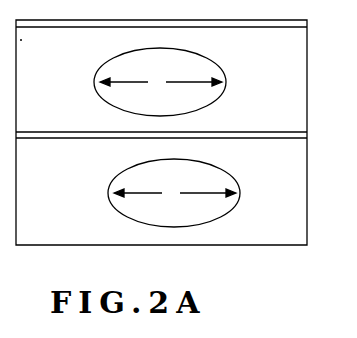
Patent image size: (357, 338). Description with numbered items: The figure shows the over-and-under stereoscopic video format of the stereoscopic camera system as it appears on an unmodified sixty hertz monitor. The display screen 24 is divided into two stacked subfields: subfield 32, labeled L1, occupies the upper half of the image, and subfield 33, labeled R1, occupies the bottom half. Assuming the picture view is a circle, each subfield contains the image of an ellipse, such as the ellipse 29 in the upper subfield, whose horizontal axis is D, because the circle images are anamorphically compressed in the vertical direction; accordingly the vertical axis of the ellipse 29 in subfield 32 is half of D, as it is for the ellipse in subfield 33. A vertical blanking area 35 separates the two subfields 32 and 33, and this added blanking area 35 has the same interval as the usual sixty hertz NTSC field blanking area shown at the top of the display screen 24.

The display screen 24 is at (280, 246).
The upper aperture 29 is at (230, 68).
The subfield 32 is at (239, 92).
The subfield 33 is at (241, 212).
The vertical blanking area 35 is at (308, 24).
The subfield L1 is at (307, 66).
The subfield R1 is at (307, 183).
The horizontal axis D is at (168, 138).